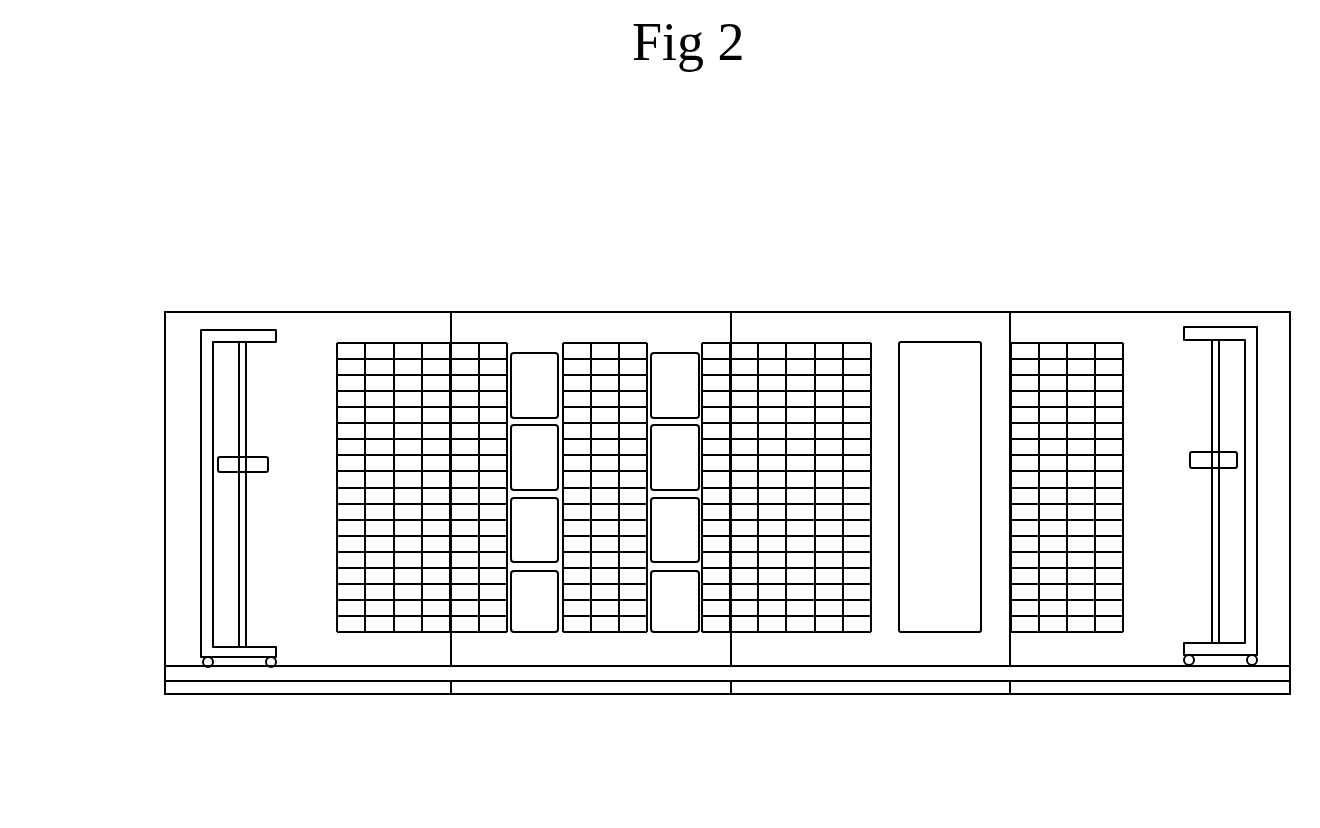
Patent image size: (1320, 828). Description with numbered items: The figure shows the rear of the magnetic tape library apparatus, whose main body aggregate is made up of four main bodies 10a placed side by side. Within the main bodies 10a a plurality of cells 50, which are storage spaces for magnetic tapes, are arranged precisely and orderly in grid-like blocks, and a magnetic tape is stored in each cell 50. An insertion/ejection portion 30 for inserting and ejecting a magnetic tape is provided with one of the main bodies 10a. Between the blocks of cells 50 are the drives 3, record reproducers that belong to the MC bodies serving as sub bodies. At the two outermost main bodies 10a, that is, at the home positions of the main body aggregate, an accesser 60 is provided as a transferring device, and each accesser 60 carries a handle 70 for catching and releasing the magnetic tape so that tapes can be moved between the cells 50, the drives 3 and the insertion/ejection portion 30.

The drive 3 is at (537, 353).
The main body 10a is at (313, 310).
The insertion/ejection portion 30 is at (944, 342).
The cell 50 is at (407, 343).
The accesser 60 is at (228, 313).
The handle 70 is at (260, 473).